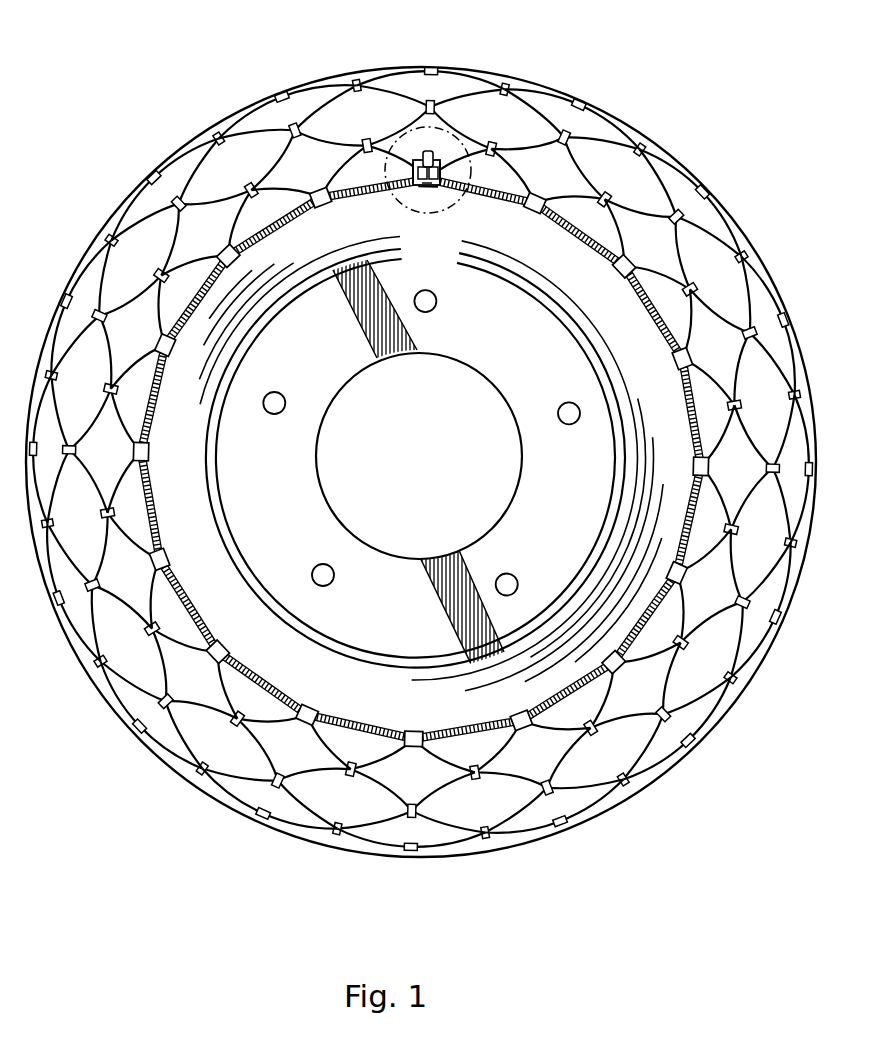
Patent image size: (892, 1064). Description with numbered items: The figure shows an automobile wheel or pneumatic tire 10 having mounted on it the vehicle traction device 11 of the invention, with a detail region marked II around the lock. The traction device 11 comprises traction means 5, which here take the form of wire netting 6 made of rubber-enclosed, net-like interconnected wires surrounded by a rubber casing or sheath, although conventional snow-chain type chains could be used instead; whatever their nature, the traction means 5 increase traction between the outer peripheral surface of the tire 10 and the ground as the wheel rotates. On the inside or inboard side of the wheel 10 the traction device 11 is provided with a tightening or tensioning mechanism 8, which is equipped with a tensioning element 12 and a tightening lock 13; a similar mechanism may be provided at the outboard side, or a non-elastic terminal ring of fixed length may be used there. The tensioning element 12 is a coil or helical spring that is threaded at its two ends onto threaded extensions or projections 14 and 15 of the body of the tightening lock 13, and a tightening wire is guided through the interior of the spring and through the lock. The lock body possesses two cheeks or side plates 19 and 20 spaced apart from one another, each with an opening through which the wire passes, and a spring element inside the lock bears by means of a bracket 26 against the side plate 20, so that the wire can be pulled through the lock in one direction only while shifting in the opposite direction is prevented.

The traction means 5 is at (616, 796).
The wire netting 6 is at (749, 662).
The tightening or tensioning mechanism 8 is at (502, 200).
The vehicular wheel or pneumatic tire 10 is at (328, 416).
The vehicle traction device 11 is at (146, 690).
The tensioning element 12 is at (206, 618).
The tightening lock 13 is at (425, 187).
The threaded extension or projection 14 is at (417, 186).
The threaded extension or projection 15 is at (441, 190).
The side plate 19 is at (443, 161).
The side plate 20 is at (413, 170).
The bracket 26 is at (429, 150).
The section II is at (385, 158).